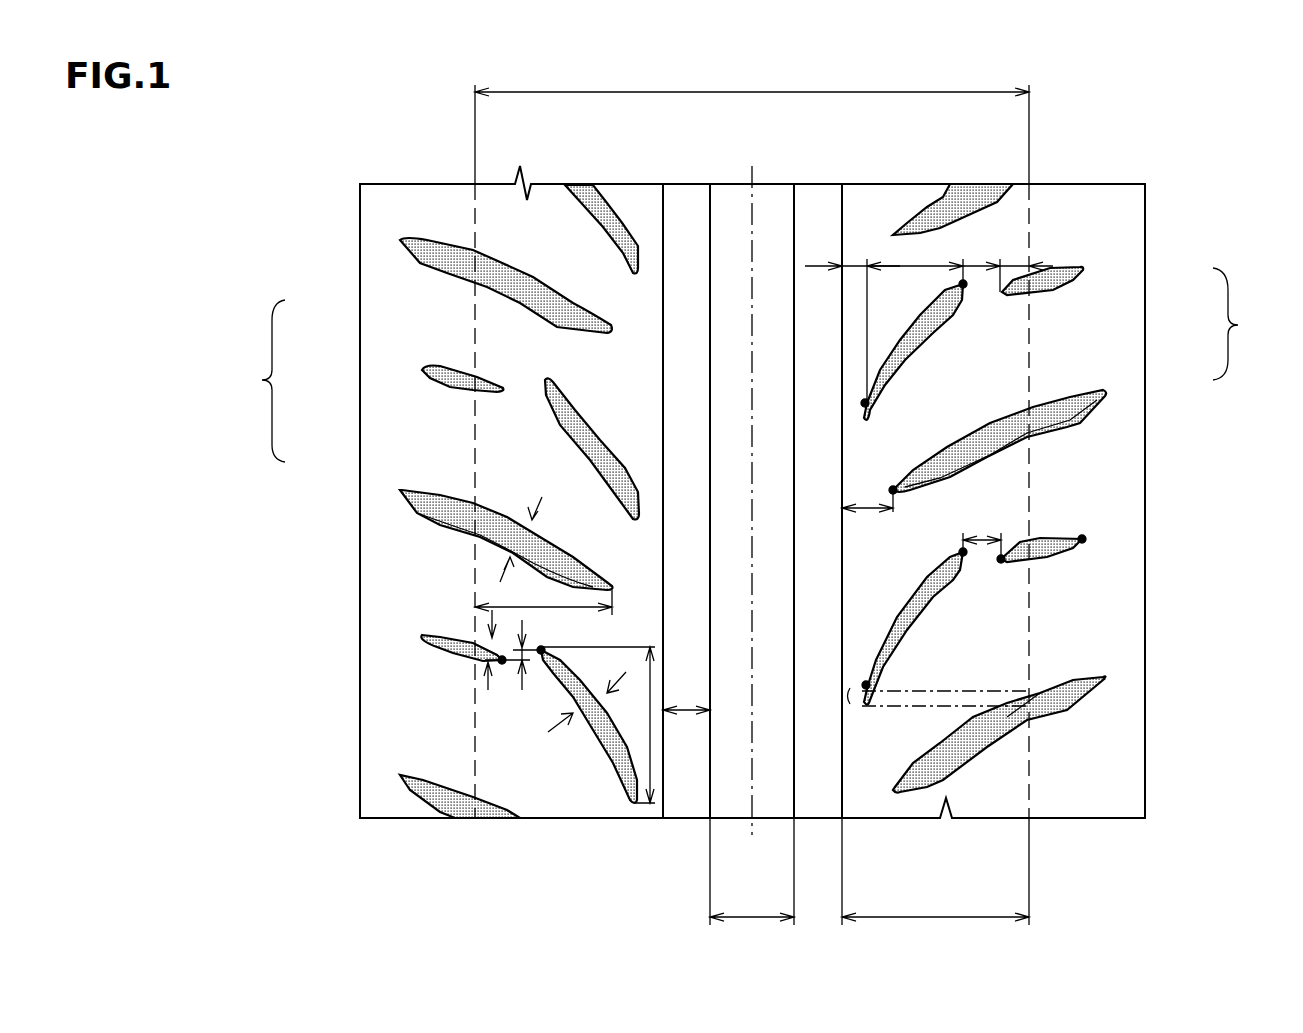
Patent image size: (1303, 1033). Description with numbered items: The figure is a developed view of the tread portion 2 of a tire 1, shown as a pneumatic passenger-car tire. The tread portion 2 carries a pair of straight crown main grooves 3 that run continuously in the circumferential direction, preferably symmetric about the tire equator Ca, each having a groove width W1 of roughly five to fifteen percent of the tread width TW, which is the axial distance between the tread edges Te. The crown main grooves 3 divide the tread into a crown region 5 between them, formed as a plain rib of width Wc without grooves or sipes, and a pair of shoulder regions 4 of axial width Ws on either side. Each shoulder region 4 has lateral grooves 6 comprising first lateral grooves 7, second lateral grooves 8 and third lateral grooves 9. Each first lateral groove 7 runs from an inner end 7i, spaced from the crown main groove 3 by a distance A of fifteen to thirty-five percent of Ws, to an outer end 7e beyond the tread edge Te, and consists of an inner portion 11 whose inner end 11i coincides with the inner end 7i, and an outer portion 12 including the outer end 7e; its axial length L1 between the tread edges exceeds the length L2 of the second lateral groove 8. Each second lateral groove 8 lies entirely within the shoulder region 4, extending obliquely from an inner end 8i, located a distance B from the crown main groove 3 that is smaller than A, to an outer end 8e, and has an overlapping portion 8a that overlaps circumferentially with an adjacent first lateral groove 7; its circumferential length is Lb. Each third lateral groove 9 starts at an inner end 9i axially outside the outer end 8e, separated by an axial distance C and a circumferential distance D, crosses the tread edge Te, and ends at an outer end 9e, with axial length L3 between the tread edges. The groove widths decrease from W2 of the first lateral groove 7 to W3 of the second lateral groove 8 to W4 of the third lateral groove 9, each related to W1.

The tire 1 is at (1190, 123).
The tread portion 2 is at (988, 155).
The crown main groove 3 is at (687, 208).
The shoulder region 4 is at (562, 215).
The crown region 5 is at (784, 214).
The lateral groove 6 is at (747, 365).
The first lateral groove 7 is at (530, 290).
The second lateral groove 8 is at (600, 435).
The third lateral groove 9 is at (495, 388).
The inner portion 11 is at (960, 752).
The outer portion 12 is at (1007, 717).
The axially inner end of first lateral groove 7i is at (1081, 648).
The inner end of inner portion 11i is at (893, 490).
The axially outer end of first lateral groove 7e is at (1105, 678).
The axially inner end of second lateral groove 8i is at (865, 403).
The axially outer end of second lateral groove 8e is at (963, 284).
The overlapping portion 8a is at (857, 690).
The inner end of third lateral groove 9i is at (502, 660).
The outer end of third lateral groove 9e is at (1082, 539).
The tread edge Te is at (475, 200).
The tire equator Ca is at (752, 486).
The tread width TW is at (752, 77).
The axial length of first lateral groove L1 is at (540, 607).
The axial length of second lateral groove L2 is at (913, 266).
The axial length of third lateral groove L3 is at (1012, 265).
The groove width of crown main groove W1 is at (688, 713).
The groove width of first lateral groove W2 is at (530, 550).
The groove width of second lateral groove W3 is at (541, 653).
The groove width of third lateral groove W4 is at (482, 658).
The width of crown region Wc is at (752, 934).
The width of shoulder region Ws is at (935, 887).
The distance A is at (872, 510).
The distance B is at (853, 266).
The distance C is at (983, 543).
The distance D is at (502, 660).
The circumferential length of second lateral groove Lb is at (648, 722).